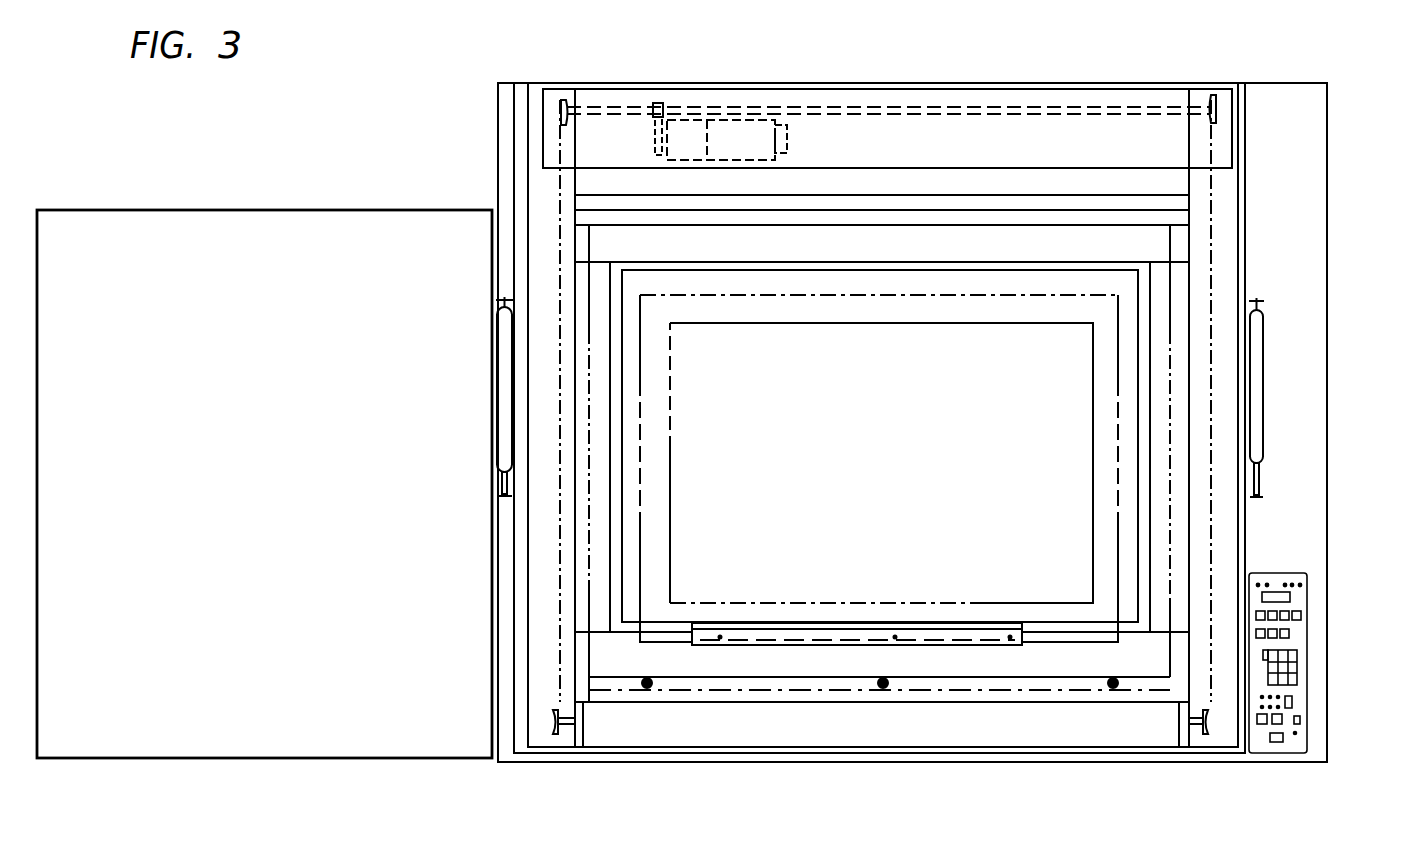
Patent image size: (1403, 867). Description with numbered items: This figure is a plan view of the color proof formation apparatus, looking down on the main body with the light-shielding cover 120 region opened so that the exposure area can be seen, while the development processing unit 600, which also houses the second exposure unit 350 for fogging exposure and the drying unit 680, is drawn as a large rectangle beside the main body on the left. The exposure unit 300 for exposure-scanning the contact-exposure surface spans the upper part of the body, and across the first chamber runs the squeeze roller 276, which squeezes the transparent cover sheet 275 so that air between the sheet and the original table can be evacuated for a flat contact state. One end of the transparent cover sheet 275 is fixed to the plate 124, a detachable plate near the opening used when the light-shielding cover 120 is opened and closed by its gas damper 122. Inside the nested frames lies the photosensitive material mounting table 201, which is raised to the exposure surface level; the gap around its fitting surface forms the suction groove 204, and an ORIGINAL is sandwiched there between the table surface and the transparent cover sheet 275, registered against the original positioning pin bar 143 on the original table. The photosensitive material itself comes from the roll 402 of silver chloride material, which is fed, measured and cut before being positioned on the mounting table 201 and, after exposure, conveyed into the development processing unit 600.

The exposure unit 300 is at (878, 81).
The squeeze roller 276 is at (1132, 193).
The photosensitive material mounting table 201 is at (1122, 275).
The suction groove 204 is at (1143, 287).
The photosensitive material roll 402 is at (1097, 338).
The gas damper 122 is at (1263, 387).
The light-shielding cover 120 is at (1245, 512).
The transparent cover sheet 275 is at (1170, 563).
The original positioning pin bar 143 is at (758, 637).
The plate 124 is at (958, 682).
The development processing unit 600 is at (264, 440).
The drying unit 680 is at (264, 440).
The second exposure unit 350 is at (168, 201).
The original ORIGINAL is at (1118, 587).